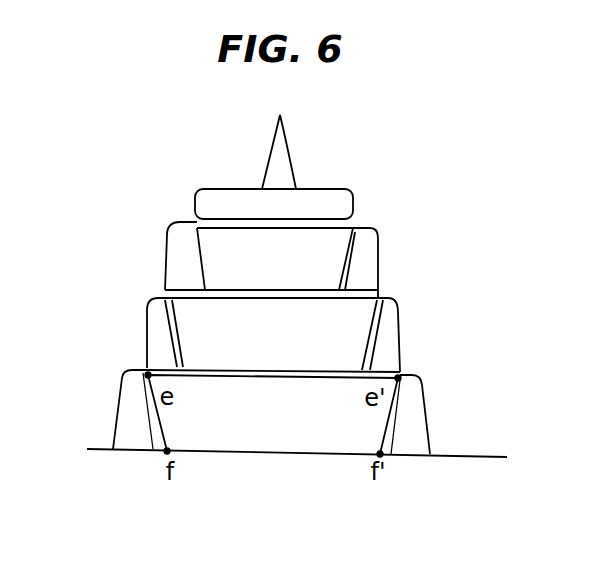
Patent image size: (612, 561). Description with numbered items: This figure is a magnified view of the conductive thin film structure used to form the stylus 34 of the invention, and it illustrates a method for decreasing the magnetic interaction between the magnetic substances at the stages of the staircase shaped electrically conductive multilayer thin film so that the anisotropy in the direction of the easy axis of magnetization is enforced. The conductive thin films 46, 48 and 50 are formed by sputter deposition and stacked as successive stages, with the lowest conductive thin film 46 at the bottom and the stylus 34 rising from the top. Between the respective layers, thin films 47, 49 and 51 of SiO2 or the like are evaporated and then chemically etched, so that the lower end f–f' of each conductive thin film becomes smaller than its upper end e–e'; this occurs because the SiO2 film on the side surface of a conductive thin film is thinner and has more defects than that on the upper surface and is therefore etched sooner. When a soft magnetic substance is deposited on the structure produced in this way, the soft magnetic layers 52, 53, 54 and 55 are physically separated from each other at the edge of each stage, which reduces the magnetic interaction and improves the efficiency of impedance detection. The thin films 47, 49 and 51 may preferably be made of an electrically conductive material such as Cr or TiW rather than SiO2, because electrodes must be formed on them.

The stylus 34 is at (283, 150).
The soft magnetic layer 55 is at (320, 198).
The thin film 51 is at (197, 220).
The conductive thin film 50 is at (328, 242).
The soft magnetic layer 54 is at (178, 253).
The thin film 49 is at (338, 278).
The conductive thin film 48 is at (385, 298).
The soft magnetic layer 53 is at (157, 335).
The thin film 47 is at (398, 373).
The soft magnetic layer 52 is at (133, 422).
The conductive thin film 46 is at (247, 454).